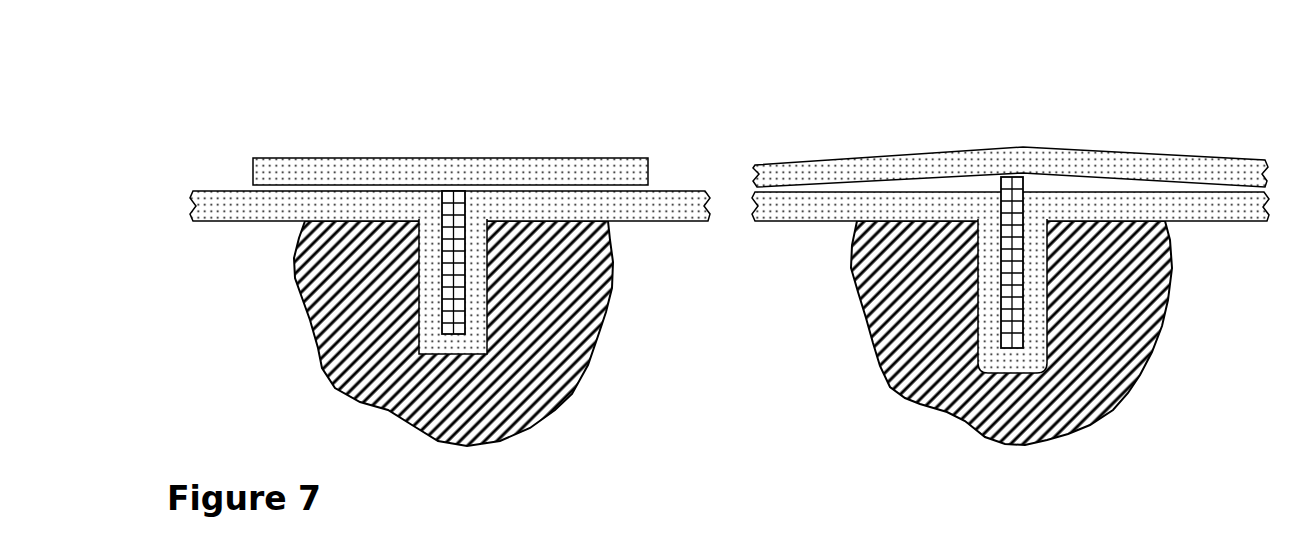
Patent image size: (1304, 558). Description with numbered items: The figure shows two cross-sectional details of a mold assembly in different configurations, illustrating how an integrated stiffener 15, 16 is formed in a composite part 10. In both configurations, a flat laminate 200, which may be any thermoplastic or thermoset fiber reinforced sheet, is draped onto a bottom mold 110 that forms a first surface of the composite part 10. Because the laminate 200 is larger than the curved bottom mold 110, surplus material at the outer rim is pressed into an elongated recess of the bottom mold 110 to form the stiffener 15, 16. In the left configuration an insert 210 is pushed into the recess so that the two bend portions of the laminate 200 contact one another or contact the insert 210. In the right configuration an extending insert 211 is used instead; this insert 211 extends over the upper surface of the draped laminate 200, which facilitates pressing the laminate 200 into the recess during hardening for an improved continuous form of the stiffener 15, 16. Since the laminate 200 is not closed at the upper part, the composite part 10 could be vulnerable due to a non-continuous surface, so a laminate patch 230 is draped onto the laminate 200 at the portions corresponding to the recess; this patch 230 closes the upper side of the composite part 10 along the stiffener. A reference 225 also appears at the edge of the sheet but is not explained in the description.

The composite part 10 is at (722, 253).
The flat laminate 200 is at (228, 204).
The laminate patch 230 is at (317, 170).
The insert 210 is at (454, 198).
The extending insert 211 is at (1012, 183).
The integrated stiffener 15 is at (480, 345).
The integrated stiffener 16 is at (1007, 367).
The bottom mold 110 is at (987, 410).
The partially visible reference 225 is at (785, 553).